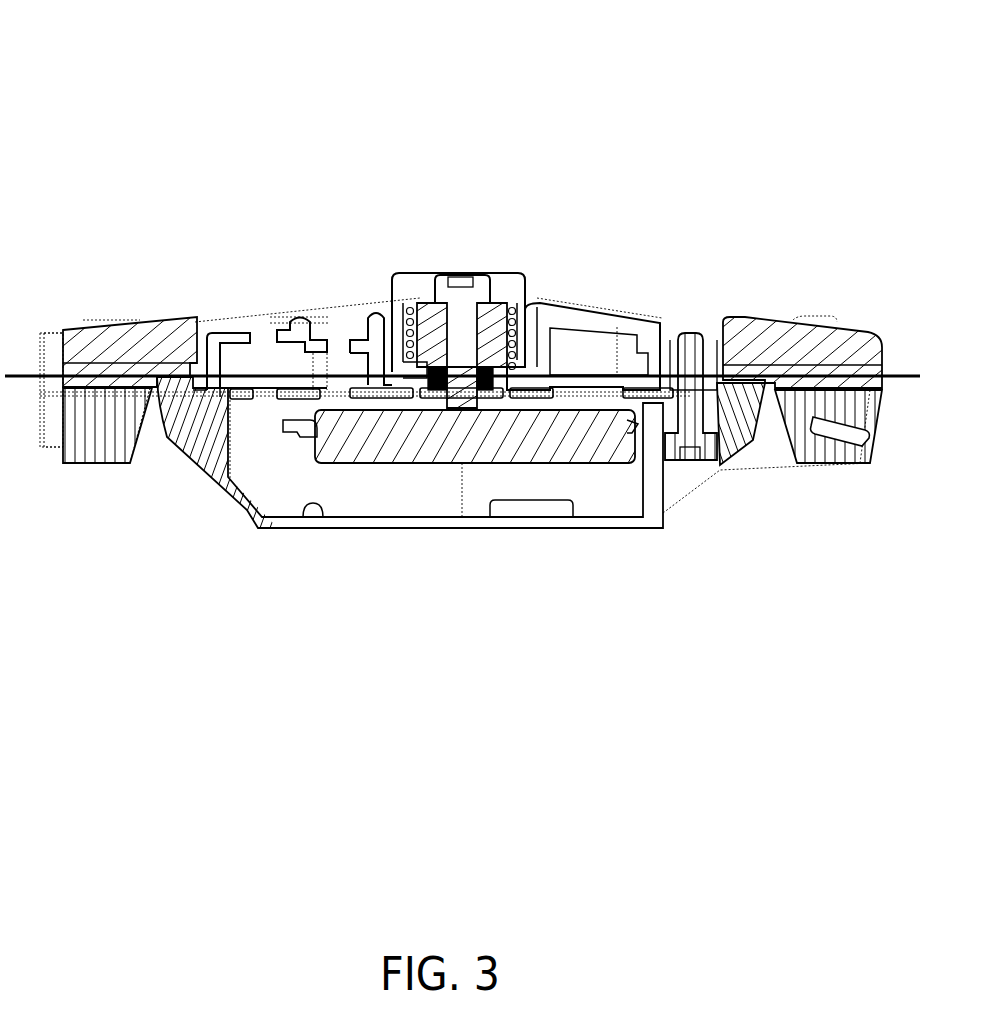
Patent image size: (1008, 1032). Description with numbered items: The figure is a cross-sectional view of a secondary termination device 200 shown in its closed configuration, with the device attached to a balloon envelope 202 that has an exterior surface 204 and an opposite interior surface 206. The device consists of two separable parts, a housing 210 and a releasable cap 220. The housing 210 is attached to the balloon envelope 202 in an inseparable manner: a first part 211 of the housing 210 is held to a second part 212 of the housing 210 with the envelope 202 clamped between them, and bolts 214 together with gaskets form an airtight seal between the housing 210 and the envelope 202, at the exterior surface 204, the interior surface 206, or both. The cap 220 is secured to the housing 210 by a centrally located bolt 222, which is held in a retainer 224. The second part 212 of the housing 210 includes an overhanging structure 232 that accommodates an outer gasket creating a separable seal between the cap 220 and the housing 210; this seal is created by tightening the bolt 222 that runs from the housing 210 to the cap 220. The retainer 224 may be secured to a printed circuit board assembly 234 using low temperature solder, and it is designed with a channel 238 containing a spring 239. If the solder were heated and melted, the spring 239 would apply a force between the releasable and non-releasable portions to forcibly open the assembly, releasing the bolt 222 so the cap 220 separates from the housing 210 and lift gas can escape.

The secondary termination device 200 is at (143, 76).
The balloon envelope 202 is at (906, 343).
The exterior surface 204 is at (25, 372).
The interior surface 206 is at (25, 378).
The housing 210 is at (762, 300).
The first part of the housing 211 is at (165, 322).
The second part of the housing 212 is at (105, 462).
The bolts 214 is at (818, 315).
The releasable cap 220 is at (298, 293).
The bolt 222 is at (477, 272).
The retainer 224 is at (412, 265).
The overhanging structure 232 is at (190, 318).
The printed circuit board assembly 234 is at (285, 400).
The channel 238 is at (522, 320).
The spring 239 is at (513, 305).